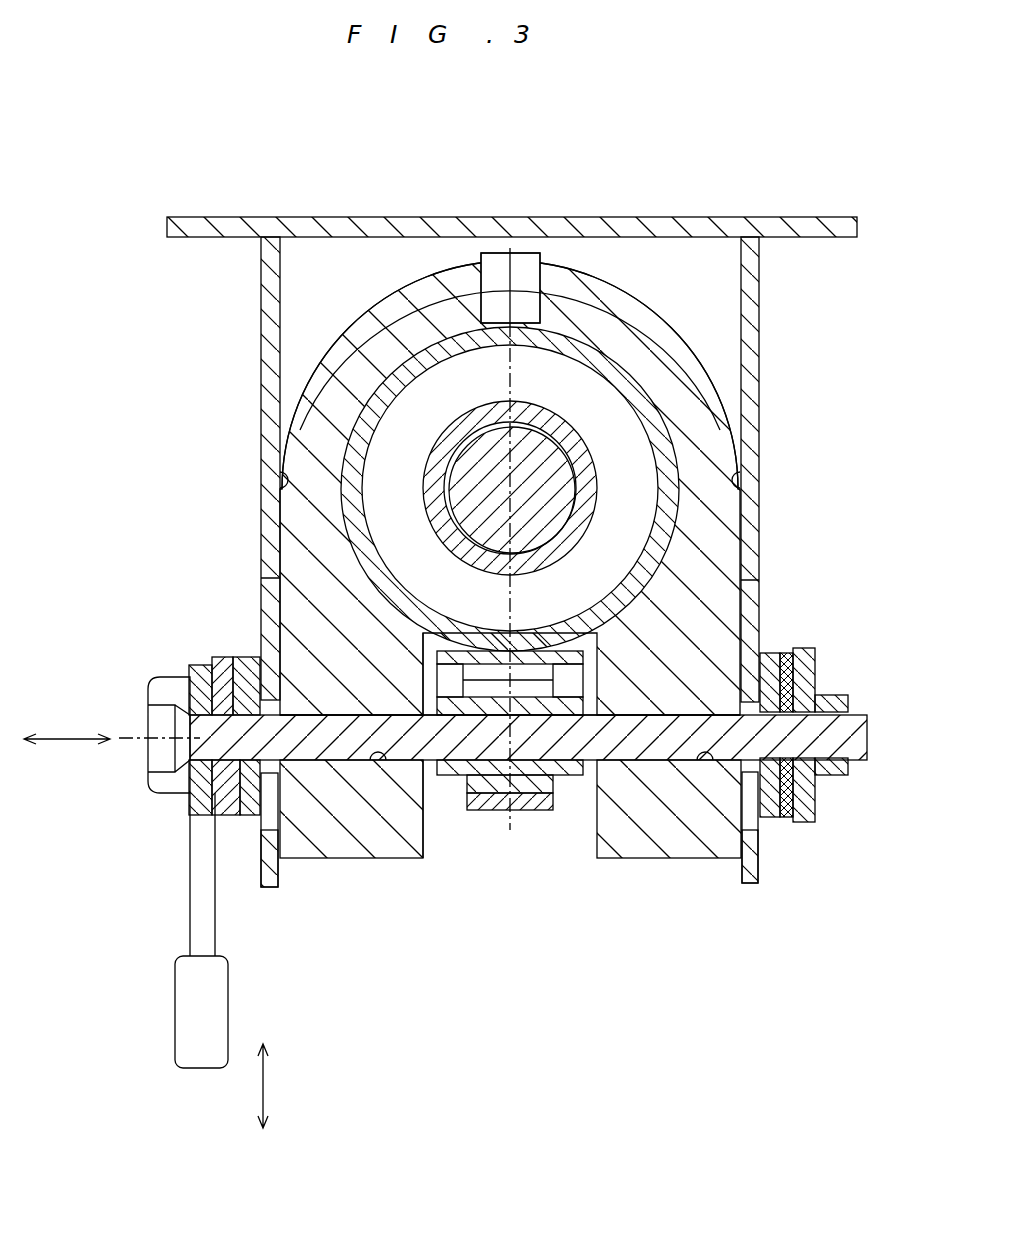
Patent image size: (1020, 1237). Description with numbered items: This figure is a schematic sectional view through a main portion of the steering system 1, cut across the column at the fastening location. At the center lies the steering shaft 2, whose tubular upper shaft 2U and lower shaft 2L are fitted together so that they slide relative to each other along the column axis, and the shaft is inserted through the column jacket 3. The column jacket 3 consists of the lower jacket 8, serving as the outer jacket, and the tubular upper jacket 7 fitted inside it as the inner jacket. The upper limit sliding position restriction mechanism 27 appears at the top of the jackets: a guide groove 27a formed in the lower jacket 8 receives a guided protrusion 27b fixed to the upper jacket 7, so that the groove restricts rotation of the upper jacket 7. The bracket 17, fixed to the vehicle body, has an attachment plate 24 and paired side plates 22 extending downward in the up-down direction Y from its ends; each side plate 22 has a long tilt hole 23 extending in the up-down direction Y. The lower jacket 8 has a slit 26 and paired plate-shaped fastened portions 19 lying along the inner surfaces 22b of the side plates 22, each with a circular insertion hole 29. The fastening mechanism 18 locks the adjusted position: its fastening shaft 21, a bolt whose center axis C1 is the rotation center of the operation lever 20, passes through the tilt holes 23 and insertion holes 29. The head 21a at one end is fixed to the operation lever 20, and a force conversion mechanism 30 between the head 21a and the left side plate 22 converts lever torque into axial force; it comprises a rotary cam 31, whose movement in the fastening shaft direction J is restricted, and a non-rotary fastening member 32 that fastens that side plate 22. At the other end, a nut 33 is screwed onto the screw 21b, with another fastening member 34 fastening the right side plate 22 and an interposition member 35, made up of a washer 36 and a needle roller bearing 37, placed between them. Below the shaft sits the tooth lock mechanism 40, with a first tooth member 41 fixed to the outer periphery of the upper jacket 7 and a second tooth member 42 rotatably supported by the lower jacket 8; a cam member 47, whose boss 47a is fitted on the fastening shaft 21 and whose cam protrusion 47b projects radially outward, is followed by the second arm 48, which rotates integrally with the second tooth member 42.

The steering system 1 is at (512, 189).
The steering shaft 2 is at (451, 488).
The upper shaft 2U is at (453, 433).
The lower shaft 2L is at (468, 487).
The column jacket 3 is at (510, 390).
The upper jacket 7 is at (637, 378).
The lower jacket 8 is at (622, 305).
The bracket 17 is at (511, 562).
The fastening mechanism 18 is at (468, 748).
The fastened portions 19 is at (302, 850).
The operation lever 20 is at (175, 1012).
The fastening shaft 21 is at (468, 806).
The head 21a is at (150, 781).
The screw 21b is at (832, 778).
The side plates 22 is at (266, 320).
The inner surface 22b is at (280, 480).
The long tilt hole 23 is at (272, 583).
The attachment plate 24 is at (366, 228).
The slit 26 is at (447, 815).
The upper limit sliding position restriction mechanism 27 is at (508, 225).
The guide groove 27a is at (538, 248).
The guided protrusion 27b is at (495, 262).
The insertion hole 29 is at (383, 752).
The force conversion mechanism 30 is at (212, 688).
The rotary cam 31 is at (205, 664).
The fastening member 32 is at (236, 707).
The nut 33 is at (830, 695).
The another fastening member 34 is at (775, 652).
The interposition member 35 is at (811, 758).
The washer 36 is at (824, 818).
The needle roller bearing 37 is at (786, 822).
The tooth lock mechanism 40 is at (572, 662).
The first tooth member 41 is at (475, 650).
The second tooth member 42 is at (522, 655).
The cam member 47 is at (519, 796).
The boss 47a is at (522, 812).
The cam protrusion 47b is at (567, 795).
The second arm 48 is at (498, 812).
The center axis C1 is at (128, 735).
The fastening shaft direction J is at (62, 736).
The up-down direction Y is at (265, 1085).